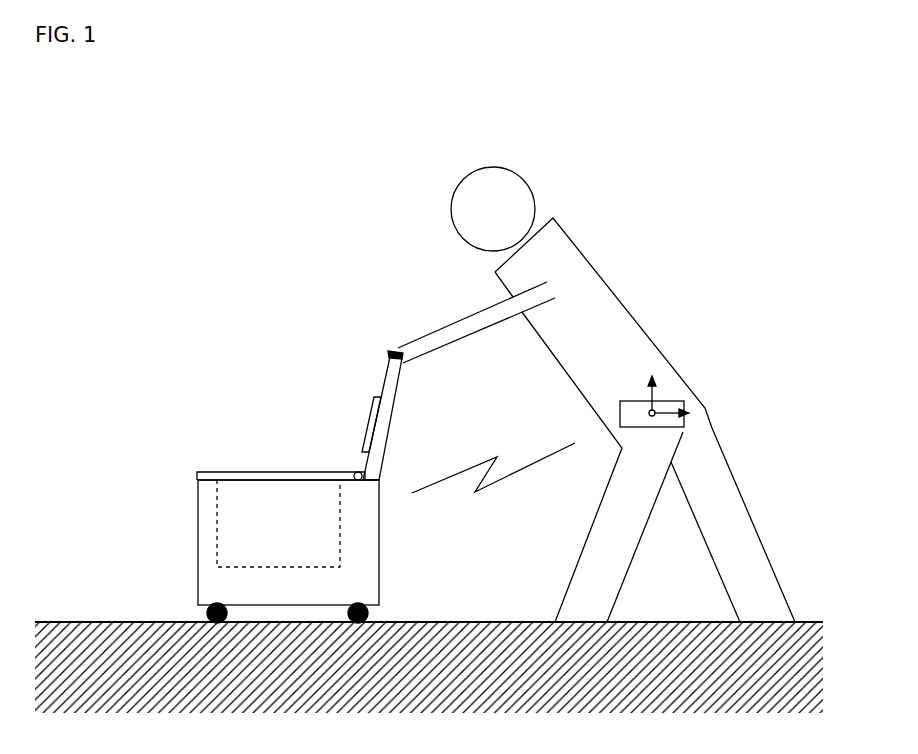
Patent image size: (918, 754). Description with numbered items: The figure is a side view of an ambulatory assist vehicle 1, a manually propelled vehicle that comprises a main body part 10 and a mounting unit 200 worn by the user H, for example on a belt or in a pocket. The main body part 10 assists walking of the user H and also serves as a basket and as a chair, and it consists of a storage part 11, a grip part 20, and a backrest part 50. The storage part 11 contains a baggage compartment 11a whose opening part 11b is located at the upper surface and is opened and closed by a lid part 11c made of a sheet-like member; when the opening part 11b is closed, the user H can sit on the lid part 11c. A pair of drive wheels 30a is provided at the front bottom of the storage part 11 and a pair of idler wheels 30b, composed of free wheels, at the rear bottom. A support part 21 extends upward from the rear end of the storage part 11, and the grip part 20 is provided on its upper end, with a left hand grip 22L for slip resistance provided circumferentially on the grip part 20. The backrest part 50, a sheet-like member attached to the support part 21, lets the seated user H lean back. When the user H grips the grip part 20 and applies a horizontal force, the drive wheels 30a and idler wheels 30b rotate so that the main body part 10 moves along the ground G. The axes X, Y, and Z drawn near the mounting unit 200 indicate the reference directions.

The ambulatory assist vehicle 1 is at (176, 140).
The main body part 10 is at (190, 500).
The storage part 11 is at (380, 557).
The baggage compartment 11a is at (335, 523).
The opening part 11b is at (225, 482).
The lid part 11c is at (280, 474).
The grip part 20 is at (390, 382).
The support part 21 is at (388, 424).
The left hand grip 22L is at (392, 350).
The drive wheels 30a is at (200, 615).
The idler wheels 30b is at (377, 613).
The backrest part 50 is at (370, 425).
The mounting unit 200 is at (683, 425).
The user H is at (603, 290).
The ground G is at (68, 622).
The X axis X is at (668, 410).
The Y axis Y is at (647, 418).
The Z axis Z is at (647, 395).